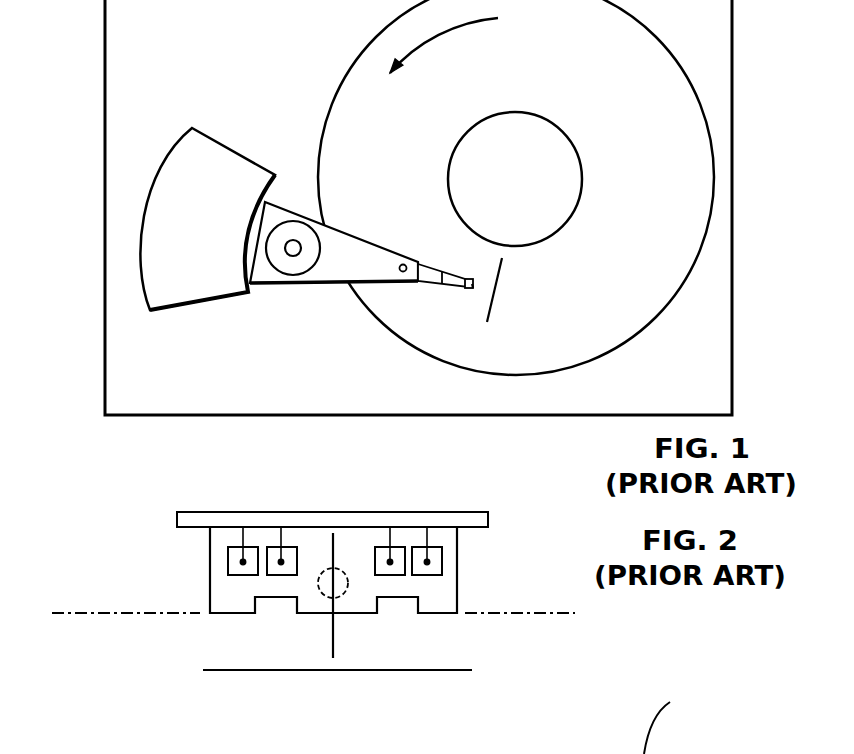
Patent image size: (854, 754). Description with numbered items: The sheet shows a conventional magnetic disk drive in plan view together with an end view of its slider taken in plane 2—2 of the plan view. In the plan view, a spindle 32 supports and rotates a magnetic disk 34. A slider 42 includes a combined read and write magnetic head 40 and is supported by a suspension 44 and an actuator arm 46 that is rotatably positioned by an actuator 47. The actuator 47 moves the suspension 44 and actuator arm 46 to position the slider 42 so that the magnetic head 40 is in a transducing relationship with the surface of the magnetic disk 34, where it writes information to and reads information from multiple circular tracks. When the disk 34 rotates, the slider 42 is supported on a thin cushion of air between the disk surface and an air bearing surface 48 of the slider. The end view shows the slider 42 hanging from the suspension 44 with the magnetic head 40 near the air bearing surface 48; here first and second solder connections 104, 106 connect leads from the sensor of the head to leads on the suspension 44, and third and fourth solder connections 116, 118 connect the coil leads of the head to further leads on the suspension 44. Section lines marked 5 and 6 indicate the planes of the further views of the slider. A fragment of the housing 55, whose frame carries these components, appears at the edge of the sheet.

In FIG. 1, the section plane 2- 2 is at (508, 274).
In FIG. 1, the spindle 32 is at (538, 113).
In FIG. 1, the magnetic disk 34 is at (645, 182).
In FIG. 1, the magnetic head 40 is at (477, 288).
In FIG. 2, the magnetic head 40 is at (318, 620).
In FIG. 1, the slider 42 is at (470, 280).
In FIG. 2, the slider 42 is at (210, 557).
In FIG. 1, the suspension 44 is at (428, 287).
In FIG. 1, the actuator arm 46 is at (340, 216).
In FIG. 1, the actuator 47 is at (225, 146).
In FIG. 2, the air bearing surface 48 is at (103, 616).
In FIG. 2, the section line 5- 5 is at (230, 682).
In FIG. 2, the section line 6- 6 is at (345, 550).
In FIG. 2, the first solder connection 104 is at (231, 551).
In FIG. 2, the second solder connection 106 is at (408, 548).
In FIG. 2, the third solder connection 116 is at (264, 547).
In FIG. 2, the fourth solder connection 118 is at (371, 548).
In FIG. 2, the housing 55 is at (673, 717).